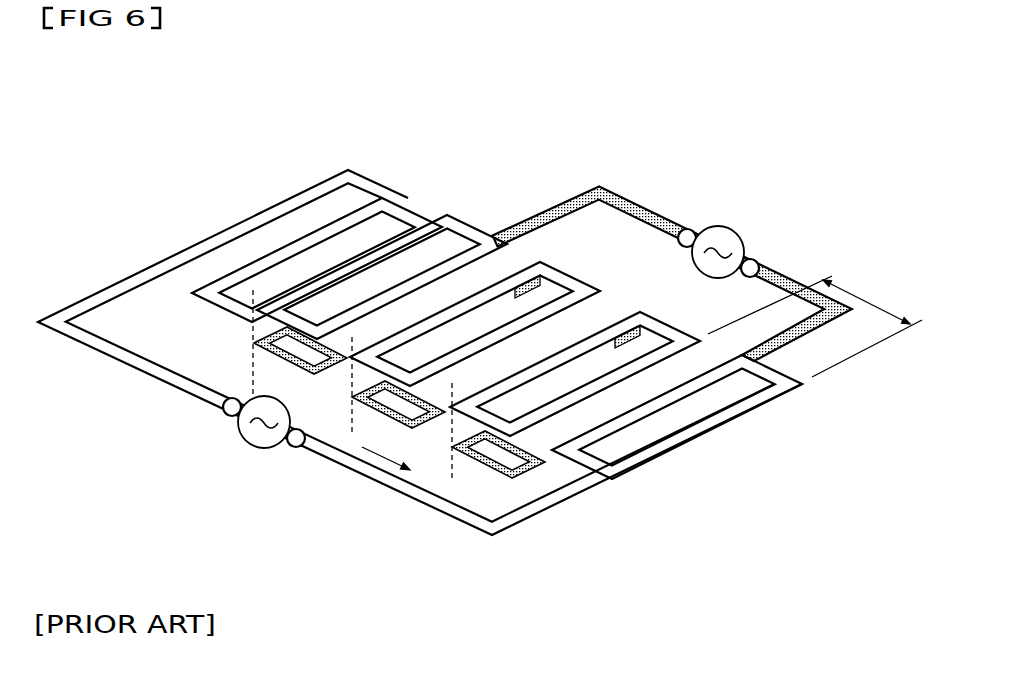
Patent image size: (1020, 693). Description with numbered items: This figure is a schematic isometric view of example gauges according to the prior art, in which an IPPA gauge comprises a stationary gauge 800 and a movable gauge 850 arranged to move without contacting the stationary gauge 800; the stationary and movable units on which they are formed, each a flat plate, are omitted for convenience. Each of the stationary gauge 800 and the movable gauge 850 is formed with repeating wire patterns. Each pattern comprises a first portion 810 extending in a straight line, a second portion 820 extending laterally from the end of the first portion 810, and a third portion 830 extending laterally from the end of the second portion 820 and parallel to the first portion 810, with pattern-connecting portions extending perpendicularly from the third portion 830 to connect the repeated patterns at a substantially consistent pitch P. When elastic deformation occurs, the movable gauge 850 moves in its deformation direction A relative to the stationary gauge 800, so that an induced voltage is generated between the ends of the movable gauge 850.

The stationary gauge 800 is at (315, 178).
The first portion 810 is at (150, 266).
The second portion 820 is at (376, 181).
The third portion 830 is at (277, 251).
The movable gauge 850 is at (530, 216).